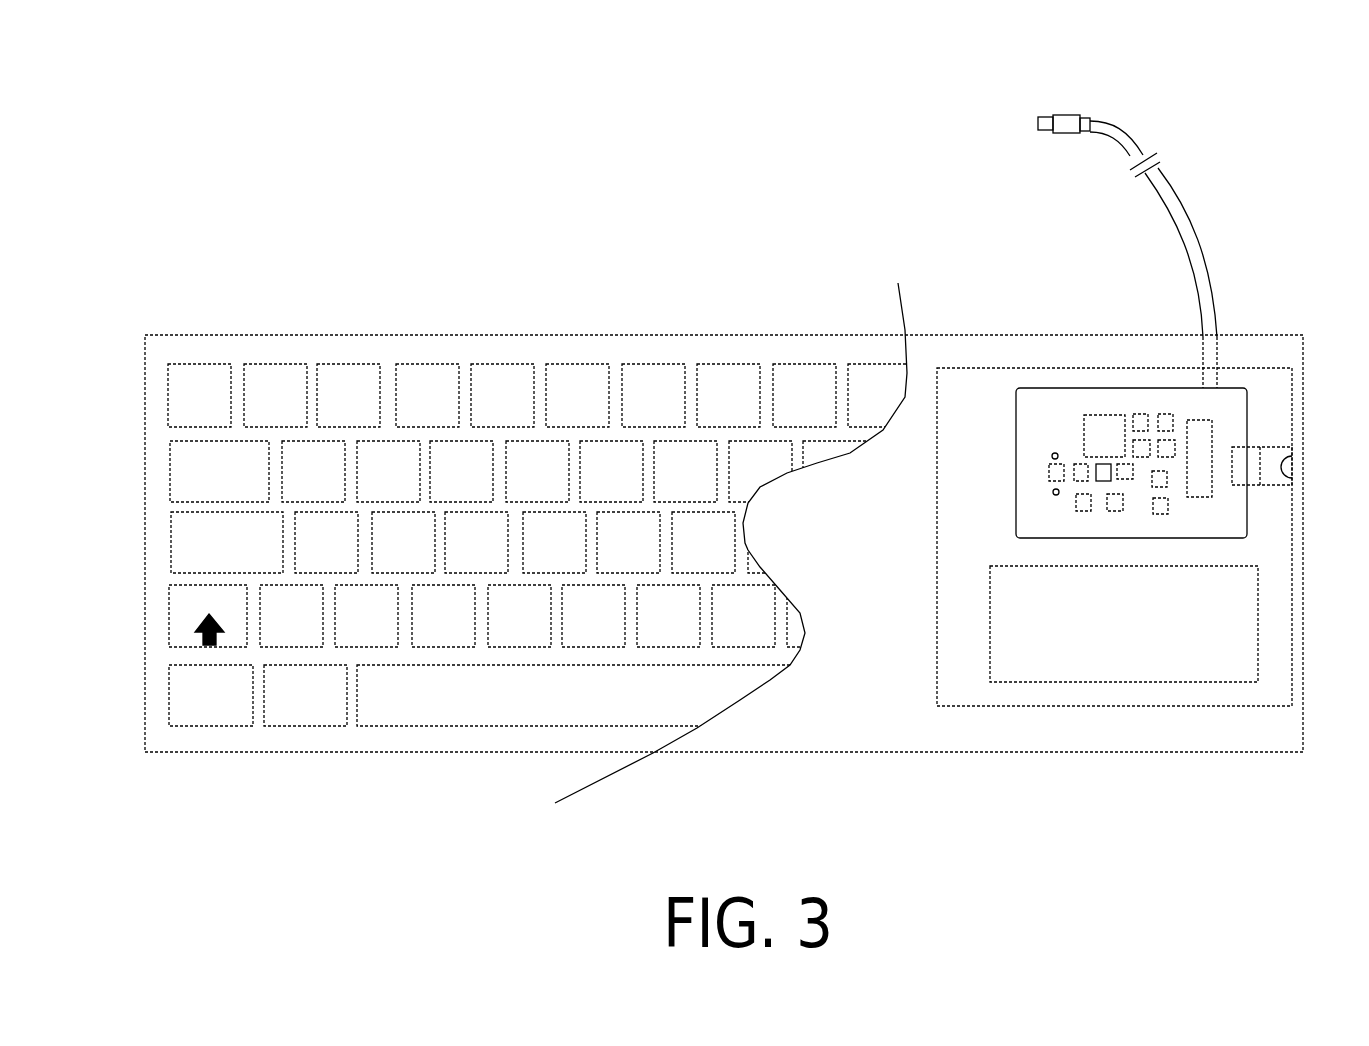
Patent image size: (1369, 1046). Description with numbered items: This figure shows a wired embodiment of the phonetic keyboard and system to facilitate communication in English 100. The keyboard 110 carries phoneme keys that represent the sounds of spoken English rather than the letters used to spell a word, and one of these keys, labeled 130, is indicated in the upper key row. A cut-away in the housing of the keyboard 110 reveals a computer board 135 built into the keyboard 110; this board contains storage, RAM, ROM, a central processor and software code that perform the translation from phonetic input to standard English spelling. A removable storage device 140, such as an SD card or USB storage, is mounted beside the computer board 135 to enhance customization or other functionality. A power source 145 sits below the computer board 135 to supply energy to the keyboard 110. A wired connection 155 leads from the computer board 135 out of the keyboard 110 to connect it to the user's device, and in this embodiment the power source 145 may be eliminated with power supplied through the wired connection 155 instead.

The phonetic keyboard and system to facilitate communication in English 100 is at (242, 187).
The keyboard 110 is at (267, 335).
The key 130 is at (598, 373).
The computer board 135 is at (1050, 413).
The removable storage device 140 is at (1275, 458).
The power source 145 is at (1163, 642).
The wired connection 155 is at (1038, 122).